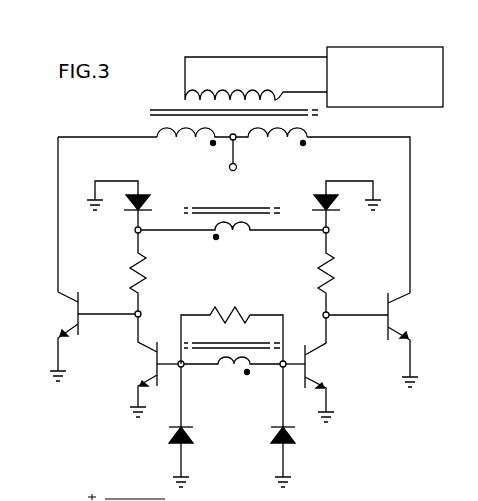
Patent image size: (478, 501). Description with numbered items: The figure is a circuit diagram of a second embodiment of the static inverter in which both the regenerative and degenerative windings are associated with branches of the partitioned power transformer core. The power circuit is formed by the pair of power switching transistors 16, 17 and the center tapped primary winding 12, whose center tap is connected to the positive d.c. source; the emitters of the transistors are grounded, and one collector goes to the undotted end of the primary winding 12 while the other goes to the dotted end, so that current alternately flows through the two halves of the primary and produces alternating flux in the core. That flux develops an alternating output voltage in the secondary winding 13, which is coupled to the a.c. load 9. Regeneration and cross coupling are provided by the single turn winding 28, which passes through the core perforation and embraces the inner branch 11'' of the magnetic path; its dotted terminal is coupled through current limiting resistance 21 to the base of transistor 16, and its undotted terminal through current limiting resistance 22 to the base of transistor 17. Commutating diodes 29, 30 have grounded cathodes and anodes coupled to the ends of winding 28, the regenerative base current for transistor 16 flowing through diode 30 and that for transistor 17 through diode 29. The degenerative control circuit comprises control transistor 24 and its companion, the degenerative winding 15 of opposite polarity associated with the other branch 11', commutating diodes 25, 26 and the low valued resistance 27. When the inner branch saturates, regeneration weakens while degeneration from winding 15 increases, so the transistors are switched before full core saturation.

The a.c. load 9 is at (377, 47).
The secondary winding 13 is at (262, 85).
The center tapped primary winding 12 is at (179, 143).
The commutating diode 29 is at (152, 206).
The commutating diode 30 is at (319, 205).
The inner branch of the magnetic path 11'' is at (232, 199).
The regenerative and cross coupling winding 28 is at (233, 247).
The current limiting resistance 21 is at (146, 280).
The current limiting resistance 22 is at (318, 271).
The low valued resistance 27 is at (225, 304).
The branch of the partitioned core 11' is at (232, 336).
The degenerative winding 15 is at (233, 378).
The power switching transistor 16 is at (67, 315).
The power switching transistor 17 is at (400, 316).
The commutating diode 25 is at (151, 364).
The control transistor 24 is at (312, 362).
The commutating diode 26 is at (294, 433).